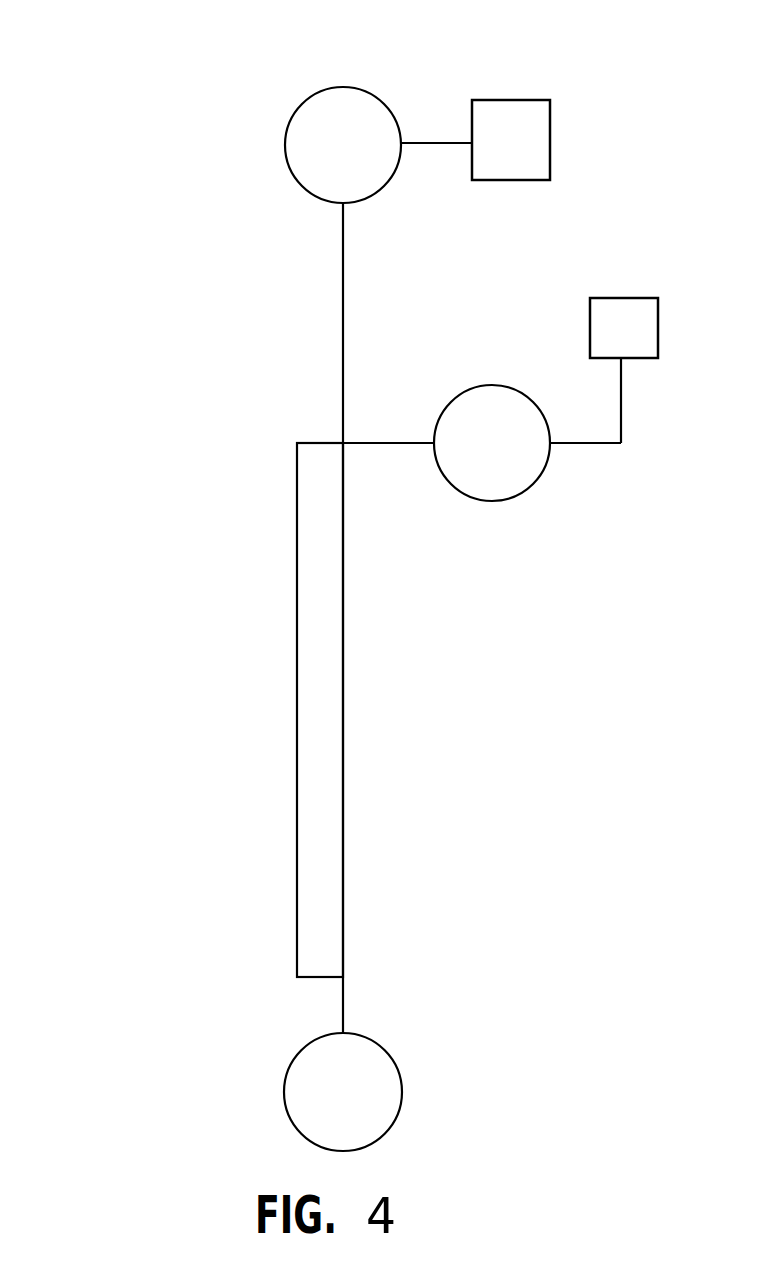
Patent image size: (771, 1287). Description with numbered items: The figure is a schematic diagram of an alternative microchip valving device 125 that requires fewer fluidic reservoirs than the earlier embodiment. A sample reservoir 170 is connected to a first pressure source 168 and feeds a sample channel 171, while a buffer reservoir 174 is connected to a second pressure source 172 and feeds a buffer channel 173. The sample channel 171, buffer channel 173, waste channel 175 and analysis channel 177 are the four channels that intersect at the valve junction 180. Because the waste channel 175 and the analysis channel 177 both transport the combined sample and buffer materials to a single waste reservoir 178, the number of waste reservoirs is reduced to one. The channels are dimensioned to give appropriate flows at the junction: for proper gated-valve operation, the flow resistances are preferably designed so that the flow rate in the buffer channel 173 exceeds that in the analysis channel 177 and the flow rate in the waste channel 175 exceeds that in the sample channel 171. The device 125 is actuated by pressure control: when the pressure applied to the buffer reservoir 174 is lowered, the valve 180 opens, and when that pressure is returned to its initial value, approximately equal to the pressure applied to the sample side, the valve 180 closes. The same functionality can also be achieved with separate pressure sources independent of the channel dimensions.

The microchip device 125 is at (172, 559).
The first pressure source 168 is at (537, 110).
The sample reservoir 170 is at (367, 88).
The sample channel 171 is at (343, 337).
The second pressure source 172 is at (645, 301).
The buffer channel 173 is at (383, 442).
The buffer reservoir 174 is at (540, 478).
The waste channel 175 is at (297, 840).
The analysis channel 177 is at (345, 830).
The waste reservoir 178 is at (380, 1043).
The valve junction 180 is at (358, 445).